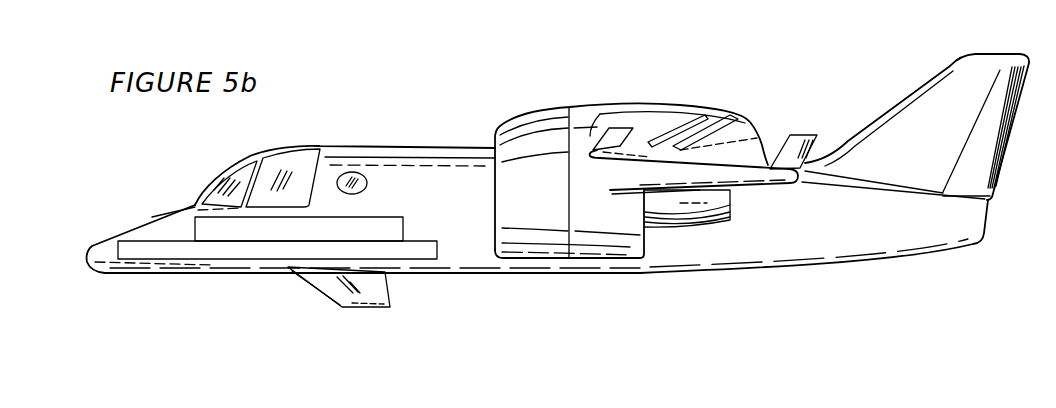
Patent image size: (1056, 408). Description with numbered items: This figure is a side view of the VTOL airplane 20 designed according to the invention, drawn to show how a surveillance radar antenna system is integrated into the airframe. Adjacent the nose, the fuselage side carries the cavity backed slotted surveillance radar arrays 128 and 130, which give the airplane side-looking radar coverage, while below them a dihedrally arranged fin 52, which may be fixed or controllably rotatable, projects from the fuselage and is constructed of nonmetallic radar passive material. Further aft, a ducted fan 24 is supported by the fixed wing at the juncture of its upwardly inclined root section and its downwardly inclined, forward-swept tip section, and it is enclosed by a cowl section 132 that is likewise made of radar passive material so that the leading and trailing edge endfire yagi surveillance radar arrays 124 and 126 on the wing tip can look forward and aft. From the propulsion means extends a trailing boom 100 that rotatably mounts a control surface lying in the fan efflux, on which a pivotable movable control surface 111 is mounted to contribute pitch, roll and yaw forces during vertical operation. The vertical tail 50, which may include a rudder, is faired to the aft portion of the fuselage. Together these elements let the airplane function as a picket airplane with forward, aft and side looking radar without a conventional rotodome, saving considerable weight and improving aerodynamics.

The VTOL airplane 20 is at (838, 81).
The ducted fan 24 is at (646, 246).
The vertical tail 50 is at (923, 94).
The fin 52 is at (380, 292).
The trailing boom 100 is at (765, 178).
The movable control surface 111 is at (798, 130).
The leading edge endfire yagi surveillance radar array 124 is at (613, 128).
The trailing edge endfire yagi surveillance radar array 126 is at (725, 128).
The cavity backed slotted surveillance radar array 128 is at (247, 254).
The cavity backed slotted surveillance radar array 130 is at (299, 229).
The cowl section 132 is at (548, 112).